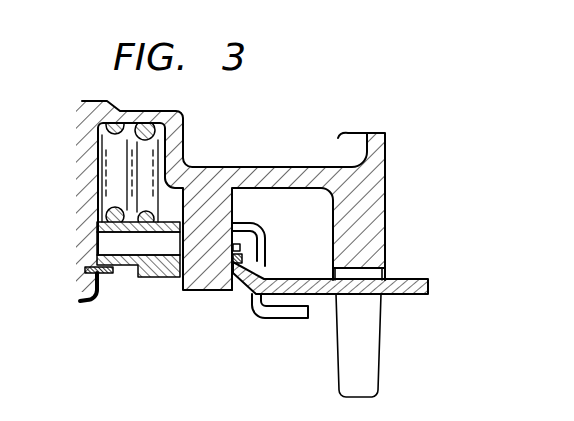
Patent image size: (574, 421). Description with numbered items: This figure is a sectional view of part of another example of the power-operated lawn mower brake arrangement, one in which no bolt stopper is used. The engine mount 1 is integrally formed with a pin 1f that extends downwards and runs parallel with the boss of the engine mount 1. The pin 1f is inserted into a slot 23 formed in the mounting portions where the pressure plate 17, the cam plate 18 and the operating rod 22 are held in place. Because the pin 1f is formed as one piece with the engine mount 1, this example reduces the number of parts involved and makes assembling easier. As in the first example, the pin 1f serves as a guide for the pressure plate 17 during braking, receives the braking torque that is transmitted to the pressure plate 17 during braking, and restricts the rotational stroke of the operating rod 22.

The engine mount 1 is at (252, 168).
The pin 1f is at (222, 206).
The pressure plate 17 is at (125, 235).
The cam plate 18 is at (153, 262).
The operating rod 22 is at (408, 278).
The slot 23 is at (198, 270).